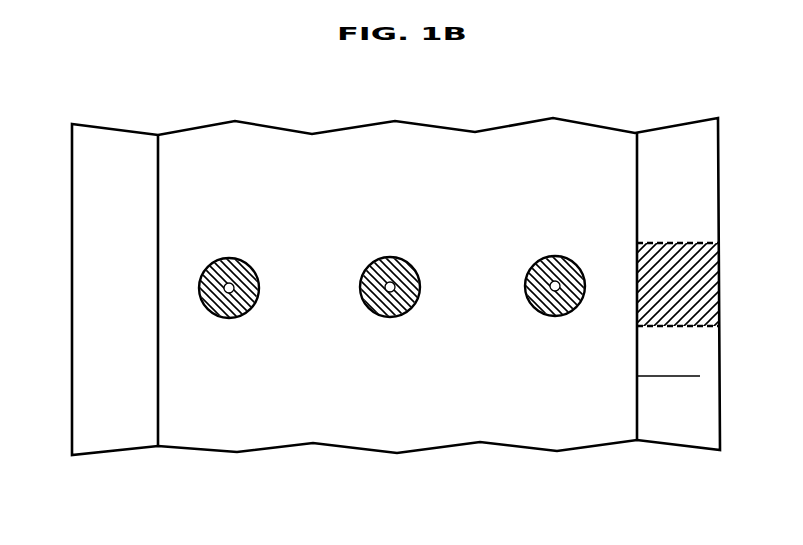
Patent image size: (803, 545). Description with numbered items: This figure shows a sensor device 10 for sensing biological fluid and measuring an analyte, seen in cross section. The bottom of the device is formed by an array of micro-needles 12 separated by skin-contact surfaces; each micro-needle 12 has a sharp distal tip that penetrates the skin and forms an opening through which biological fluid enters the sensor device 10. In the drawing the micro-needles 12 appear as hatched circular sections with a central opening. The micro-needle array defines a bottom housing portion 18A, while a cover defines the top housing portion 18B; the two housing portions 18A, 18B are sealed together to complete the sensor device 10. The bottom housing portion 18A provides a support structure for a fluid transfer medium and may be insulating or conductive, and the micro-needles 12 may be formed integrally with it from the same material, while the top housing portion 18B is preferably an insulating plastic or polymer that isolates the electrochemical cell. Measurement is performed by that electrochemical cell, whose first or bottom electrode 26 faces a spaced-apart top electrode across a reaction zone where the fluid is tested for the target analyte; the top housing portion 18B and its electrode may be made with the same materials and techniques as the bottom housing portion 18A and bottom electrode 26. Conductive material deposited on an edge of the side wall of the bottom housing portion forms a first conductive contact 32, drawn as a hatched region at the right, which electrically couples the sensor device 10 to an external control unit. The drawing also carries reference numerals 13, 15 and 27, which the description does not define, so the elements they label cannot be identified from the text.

The sensor device 10 is at (625, 120).
The micro-needle 12 is at (247, 296).
The wire / fiber 13 is at (225, 287).
The lumen wall 15 is at (240, 260).
The bottom housing portion 18A is at (92, 442).
The top housing portion 18B is at (663, 418).
The first or bottom electrode 26 is at (190, 162).
The line 27 is at (700, 376).
The first conductive contact 32 is at (703, 268).